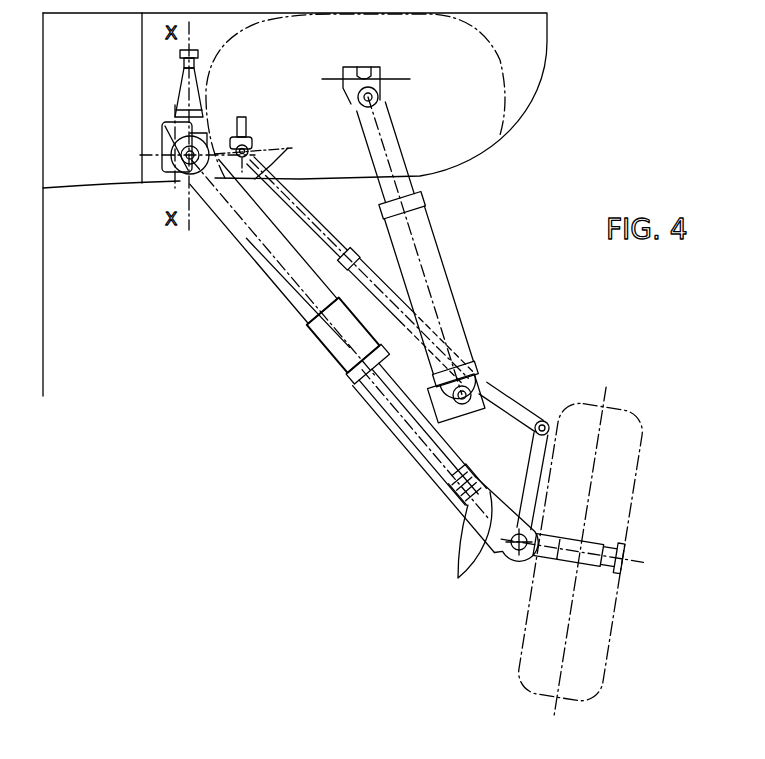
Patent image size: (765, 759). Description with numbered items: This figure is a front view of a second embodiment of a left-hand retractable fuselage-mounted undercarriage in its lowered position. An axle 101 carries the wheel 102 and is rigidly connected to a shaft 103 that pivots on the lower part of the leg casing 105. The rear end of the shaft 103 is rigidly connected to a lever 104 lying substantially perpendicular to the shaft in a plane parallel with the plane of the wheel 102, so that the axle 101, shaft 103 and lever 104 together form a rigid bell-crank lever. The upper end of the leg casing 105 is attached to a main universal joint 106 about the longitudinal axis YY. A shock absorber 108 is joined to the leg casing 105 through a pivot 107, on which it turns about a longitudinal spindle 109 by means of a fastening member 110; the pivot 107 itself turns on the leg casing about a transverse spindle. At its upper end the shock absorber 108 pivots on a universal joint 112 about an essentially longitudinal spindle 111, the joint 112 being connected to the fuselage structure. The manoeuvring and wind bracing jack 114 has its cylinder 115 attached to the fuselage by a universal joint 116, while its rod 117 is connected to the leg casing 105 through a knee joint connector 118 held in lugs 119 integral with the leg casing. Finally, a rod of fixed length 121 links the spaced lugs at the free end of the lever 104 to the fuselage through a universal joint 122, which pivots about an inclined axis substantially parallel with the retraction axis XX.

The axle 101 is at (587, 560).
The wheel 102 is at (623, 469).
The shaft 103 is at (520, 560).
The lever 104 is at (537, 468).
The leg casing 105 is at (397, 420).
The universal joint 106 is at (188, 98).
The pivot 107 is at (460, 414).
The shock absorber 108 is at (423, 243).
The longitudinal spindle 109 is at (470, 393).
The fastening member 110 is at (470, 374).
The longitudinal spindle 111 is at (373, 98).
The universal joint 112 is at (377, 72).
The manoeuvring and wind bracing jack 114 is at (343, 354).
The cylinder 115 is at (268, 260).
The universal joint 116 is at (165, 148).
The rod 117 is at (437, 450).
The knee joint connector 118 is at (462, 490).
The lugs 119 is at (457, 575).
The rod of fixed length 121 is at (346, 247).
The universal joint 122 is at (249, 142).